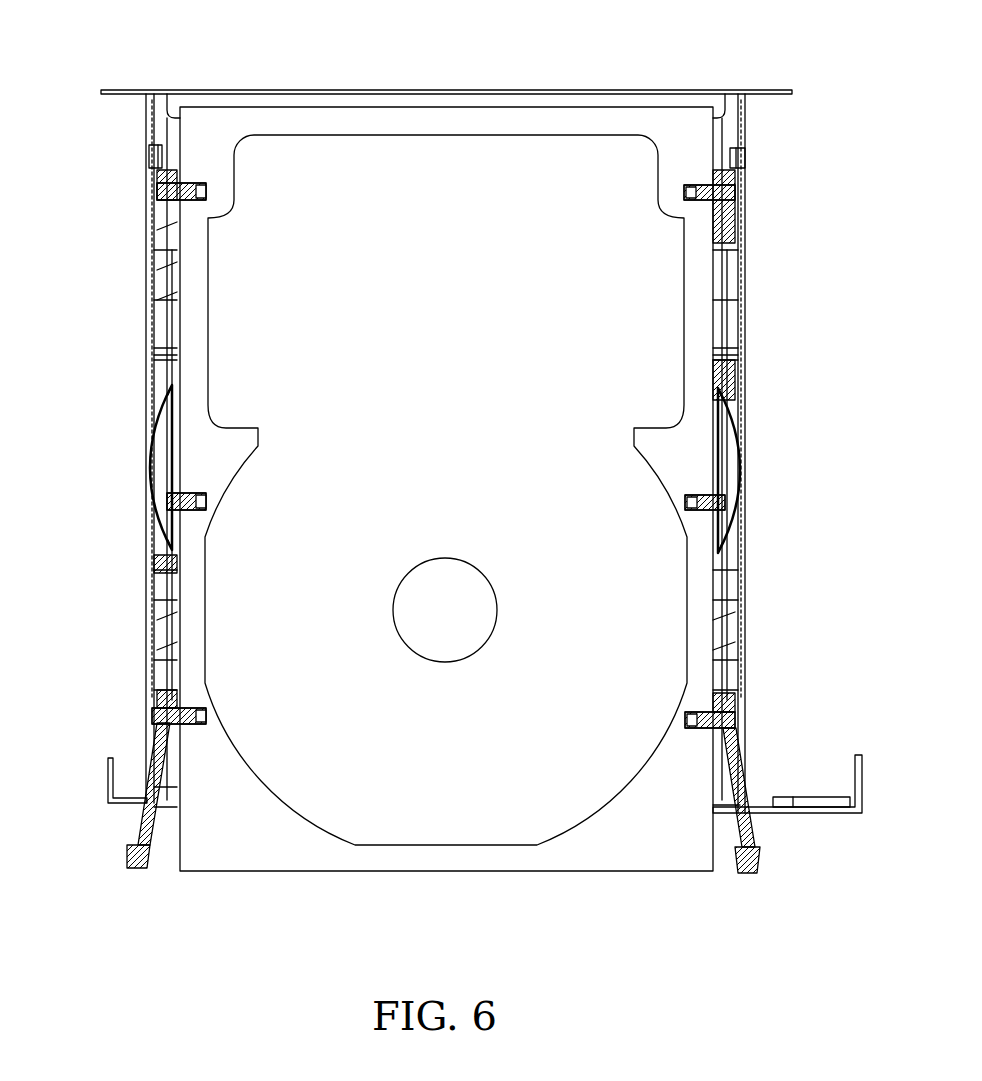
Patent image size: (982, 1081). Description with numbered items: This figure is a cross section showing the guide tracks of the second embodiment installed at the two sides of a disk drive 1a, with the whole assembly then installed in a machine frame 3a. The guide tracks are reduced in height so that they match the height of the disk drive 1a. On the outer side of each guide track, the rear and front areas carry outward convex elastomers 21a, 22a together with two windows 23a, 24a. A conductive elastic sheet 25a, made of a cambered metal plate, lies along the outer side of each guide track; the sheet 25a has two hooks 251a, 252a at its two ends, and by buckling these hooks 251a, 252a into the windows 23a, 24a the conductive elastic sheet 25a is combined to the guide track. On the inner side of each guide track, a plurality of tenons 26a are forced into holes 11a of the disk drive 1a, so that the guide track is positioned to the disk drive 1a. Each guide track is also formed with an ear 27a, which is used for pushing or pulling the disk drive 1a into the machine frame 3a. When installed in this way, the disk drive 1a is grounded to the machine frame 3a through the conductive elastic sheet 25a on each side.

The disk drive 1a is at (504, 160).
The machine frame 3a is at (150, 557).
The engaging projection 11a is at (206, 192).
The outward convex elastomer 21a is at (152, 275).
The outward convex elastomer 22a is at (150, 652).
The window 23a is at (742, 392).
The window 24a is at (153, 568).
The conductive elastic sheet 25a is at (152, 468).
The tenon 26a is at (443, 462).
The ear 27a is at (165, 828).
The hook 251a is at (172, 390).
The hook 252a is at (172, 548).